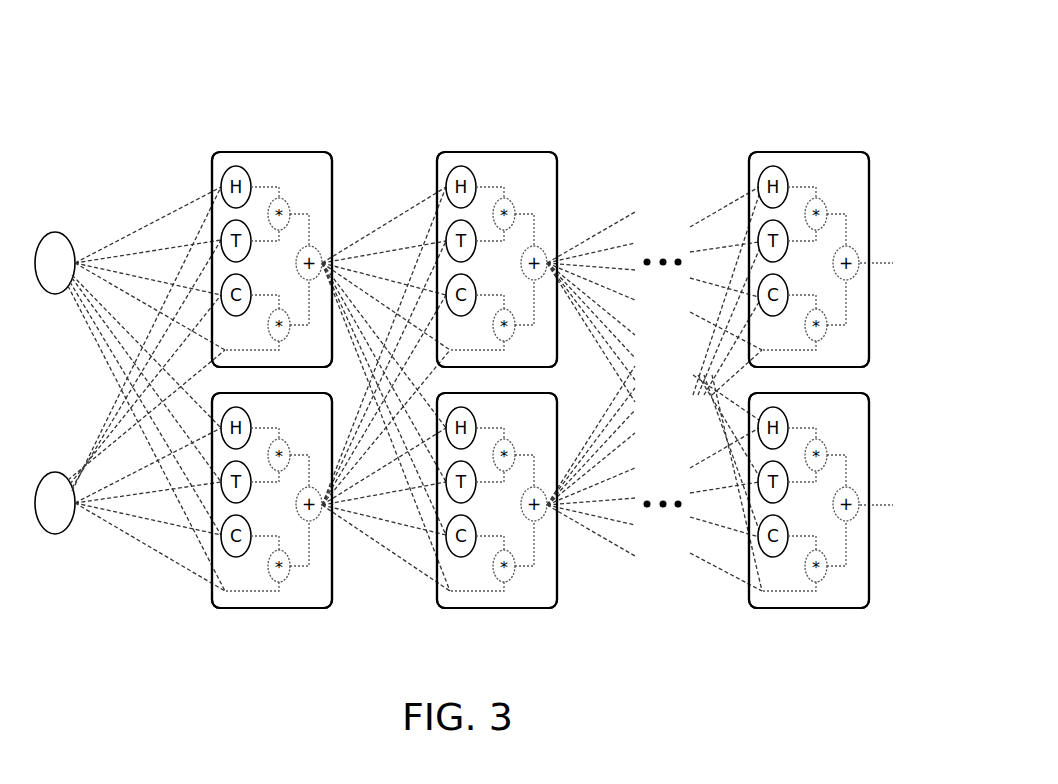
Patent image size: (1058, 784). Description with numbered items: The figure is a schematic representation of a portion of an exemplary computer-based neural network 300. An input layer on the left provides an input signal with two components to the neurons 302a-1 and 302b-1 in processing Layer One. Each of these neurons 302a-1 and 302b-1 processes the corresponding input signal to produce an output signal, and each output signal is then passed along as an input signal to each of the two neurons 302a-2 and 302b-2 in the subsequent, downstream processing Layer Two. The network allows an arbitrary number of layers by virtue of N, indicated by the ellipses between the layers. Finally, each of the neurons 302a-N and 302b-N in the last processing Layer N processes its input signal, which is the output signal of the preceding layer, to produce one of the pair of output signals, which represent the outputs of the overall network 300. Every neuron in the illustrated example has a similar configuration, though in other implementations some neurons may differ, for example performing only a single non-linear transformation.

The computer-based neural network 300 is at (857, 103).
The neuron 302a-1 is at (228, 150).
The neuron 302a-2 is at (447, 152).
The neuron 302a-N is at (747, 182).
The neuron 302b-1 is at (205, 607).
The neuron 302b-2 is at (424, 595).
The neuron 302b-N is at (742, 607).